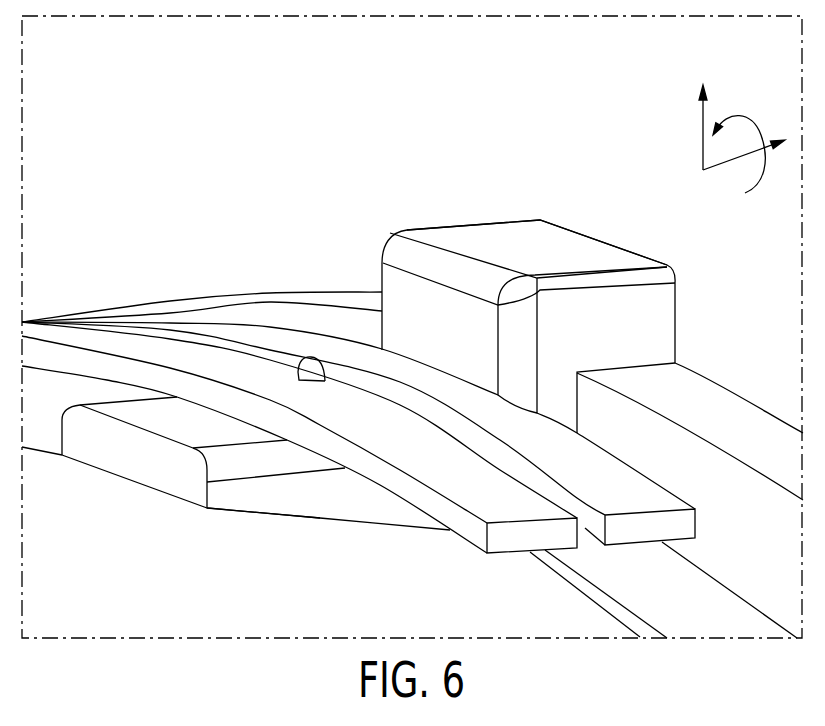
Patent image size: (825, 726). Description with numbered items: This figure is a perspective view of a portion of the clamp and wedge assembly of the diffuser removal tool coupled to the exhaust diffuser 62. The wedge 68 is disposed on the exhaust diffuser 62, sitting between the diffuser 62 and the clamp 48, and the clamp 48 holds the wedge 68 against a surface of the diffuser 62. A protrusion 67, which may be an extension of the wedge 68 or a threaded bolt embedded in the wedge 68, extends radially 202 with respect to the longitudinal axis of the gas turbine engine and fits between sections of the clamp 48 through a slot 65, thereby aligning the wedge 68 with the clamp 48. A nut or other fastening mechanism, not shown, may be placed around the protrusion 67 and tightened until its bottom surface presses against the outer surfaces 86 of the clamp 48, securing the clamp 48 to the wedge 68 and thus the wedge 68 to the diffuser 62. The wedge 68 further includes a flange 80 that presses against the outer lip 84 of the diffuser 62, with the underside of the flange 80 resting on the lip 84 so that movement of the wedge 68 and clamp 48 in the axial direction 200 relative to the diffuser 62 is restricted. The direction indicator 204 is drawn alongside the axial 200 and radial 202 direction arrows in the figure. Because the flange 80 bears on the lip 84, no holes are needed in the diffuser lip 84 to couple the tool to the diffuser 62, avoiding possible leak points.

The clamp 48 is at (80, 327).
The outer surfaces of the clamp 86 is at (175, 350).
The protrusion 67 is at (311, 358).
The wedge 68 is at (502, 235).
The flange 80 is at (643, 317).
The outer lip of the diffuser 84 is at (735, 410).
The exhaust diffuser 62 is at (572, 603).
The slot 65 is at (585, 540).
The axial direction 200 is at (743, 163).
The radial direction 202 is at (708, 132).
The rotation direction 204 is at (747, 127).